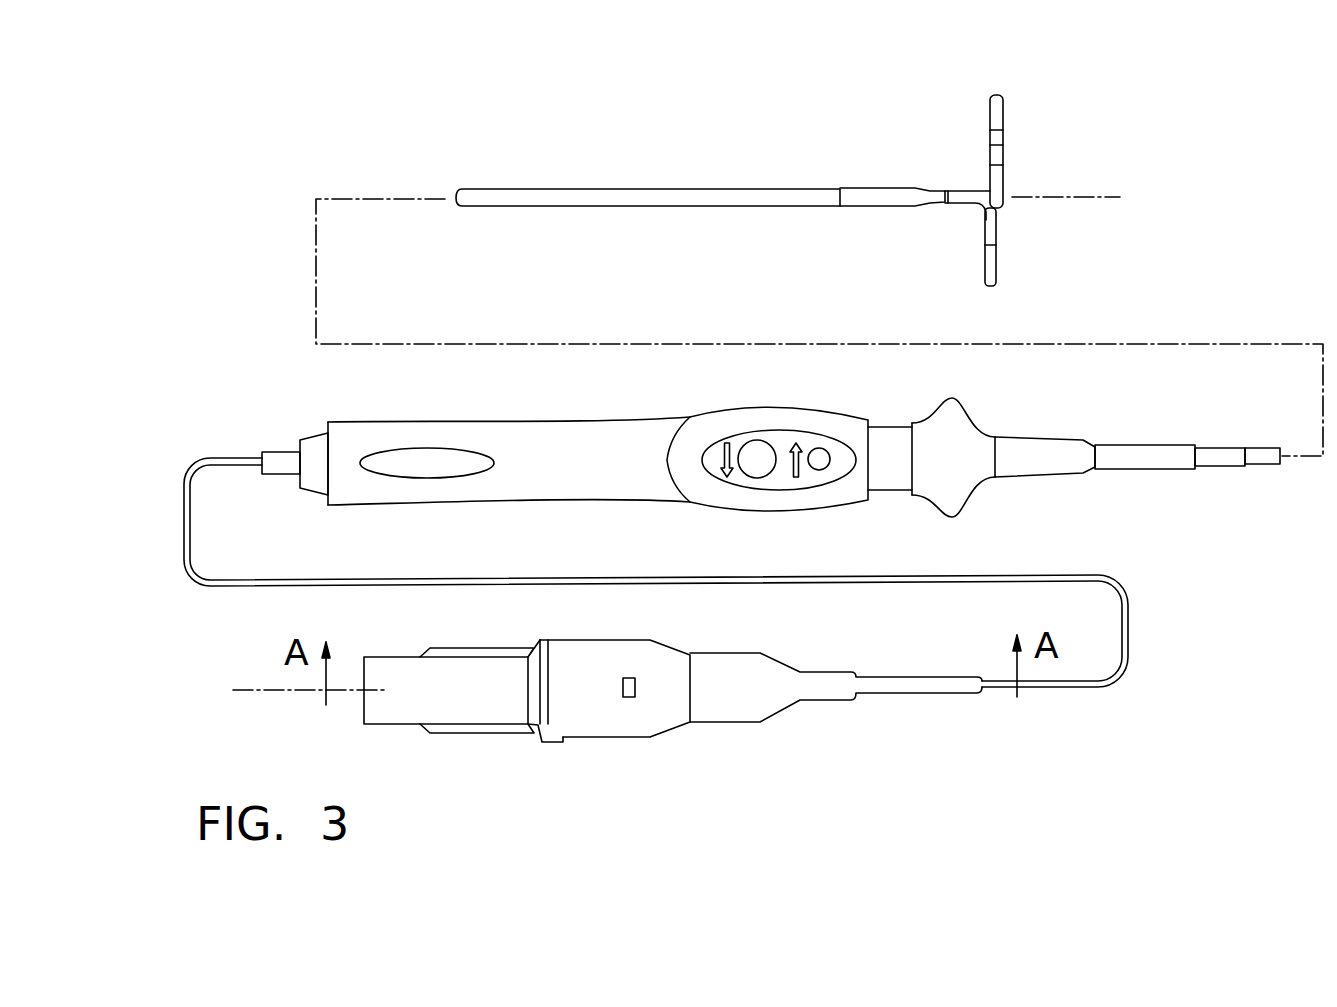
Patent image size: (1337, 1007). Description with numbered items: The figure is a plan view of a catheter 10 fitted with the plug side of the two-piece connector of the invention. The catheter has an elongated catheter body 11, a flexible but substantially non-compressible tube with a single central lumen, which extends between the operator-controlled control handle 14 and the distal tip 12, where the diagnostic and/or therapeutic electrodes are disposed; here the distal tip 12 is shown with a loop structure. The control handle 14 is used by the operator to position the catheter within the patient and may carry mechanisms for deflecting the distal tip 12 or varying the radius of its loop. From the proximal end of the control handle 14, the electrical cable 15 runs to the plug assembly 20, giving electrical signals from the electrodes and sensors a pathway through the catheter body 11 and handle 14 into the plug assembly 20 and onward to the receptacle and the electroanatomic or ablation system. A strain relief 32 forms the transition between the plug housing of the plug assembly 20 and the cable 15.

The medical device system 10 is at (358, 107).
The distal tip 12 is at (1055, 148).
The control handle 14 is at (808, 413).
The catheter body 11 is at (1260, 447).
The electrical cable 15 is at (1078, 575).
The plug assembly 20 is at (415, 642).
The strain relief 32 is at (735, 653).